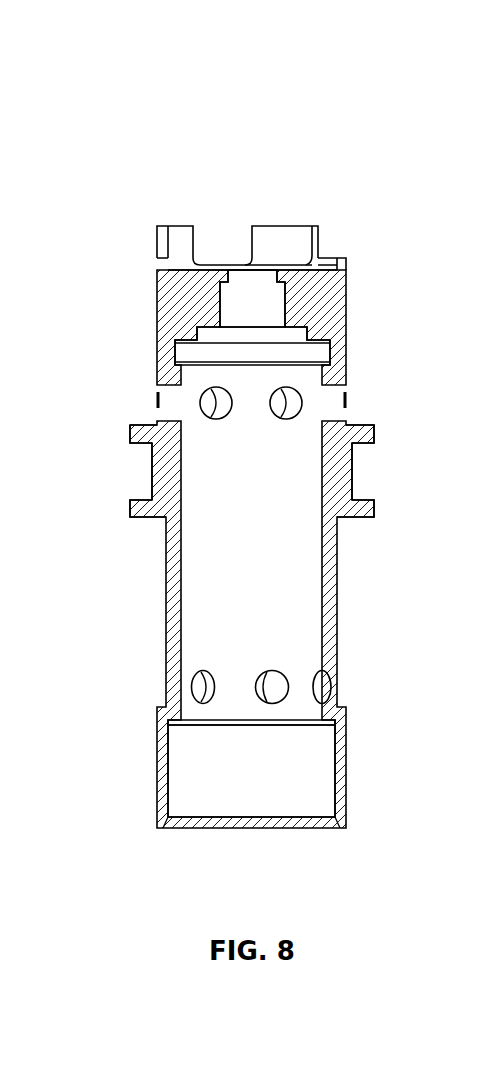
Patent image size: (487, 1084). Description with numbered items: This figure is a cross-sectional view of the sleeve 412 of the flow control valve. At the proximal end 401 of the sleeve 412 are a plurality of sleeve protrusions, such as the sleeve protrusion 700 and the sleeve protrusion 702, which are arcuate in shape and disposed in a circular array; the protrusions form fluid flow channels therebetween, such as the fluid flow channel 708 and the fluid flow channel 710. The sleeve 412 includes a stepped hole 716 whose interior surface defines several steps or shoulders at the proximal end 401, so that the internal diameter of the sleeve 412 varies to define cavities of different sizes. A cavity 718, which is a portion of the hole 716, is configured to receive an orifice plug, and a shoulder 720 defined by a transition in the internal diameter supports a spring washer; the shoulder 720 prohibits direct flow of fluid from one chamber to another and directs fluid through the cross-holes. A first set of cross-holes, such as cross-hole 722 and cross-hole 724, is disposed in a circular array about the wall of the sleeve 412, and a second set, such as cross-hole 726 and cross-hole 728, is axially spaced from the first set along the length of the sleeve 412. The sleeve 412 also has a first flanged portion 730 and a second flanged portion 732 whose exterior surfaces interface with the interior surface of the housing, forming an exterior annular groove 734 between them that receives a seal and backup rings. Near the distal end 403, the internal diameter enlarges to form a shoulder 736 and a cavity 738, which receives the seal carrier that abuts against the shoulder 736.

The proximal end 401 is at (223, 78).
The distal end 403 is at (276, 878).
The sleeve 412 is at (140, 238).
The sleeve protrusion 700 is at (185, 227).
The sleeve protrusion 702 is at (307, 227).
The fluid flow channel 708 is at (226, 240).
The fluid flow channel 710 is at (332, 240).
The hole 716 is at (247, 376).
The cavity 718 is at (231, 318).
The shoulder 720 is at (300, 337).
The cross-hole 722 is at (355, 400).
The cross-hole 724 is at (148, 405).
The cross-hole 726 is at (330, 688).
The cross-hole 728 is at (196, 688).
The first flanged portion 730 is at (375, 437).
The second flanged portion 732 is at (375, 507).
The groove 734 is at (365, 473).
The shoulder 736 is at (178, 736).
The cavity 738 is at (237, 778).